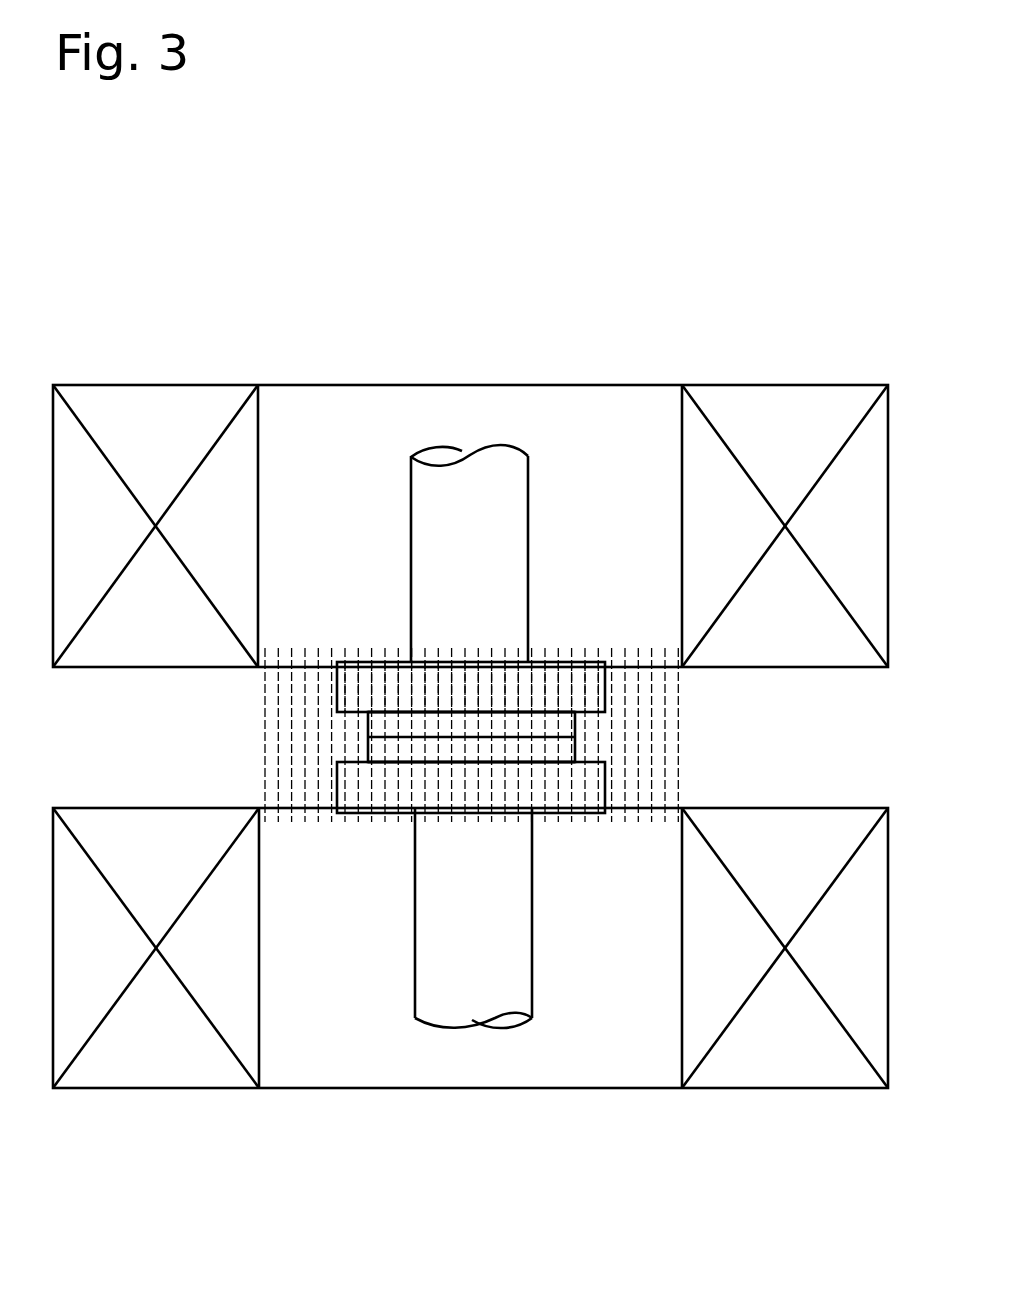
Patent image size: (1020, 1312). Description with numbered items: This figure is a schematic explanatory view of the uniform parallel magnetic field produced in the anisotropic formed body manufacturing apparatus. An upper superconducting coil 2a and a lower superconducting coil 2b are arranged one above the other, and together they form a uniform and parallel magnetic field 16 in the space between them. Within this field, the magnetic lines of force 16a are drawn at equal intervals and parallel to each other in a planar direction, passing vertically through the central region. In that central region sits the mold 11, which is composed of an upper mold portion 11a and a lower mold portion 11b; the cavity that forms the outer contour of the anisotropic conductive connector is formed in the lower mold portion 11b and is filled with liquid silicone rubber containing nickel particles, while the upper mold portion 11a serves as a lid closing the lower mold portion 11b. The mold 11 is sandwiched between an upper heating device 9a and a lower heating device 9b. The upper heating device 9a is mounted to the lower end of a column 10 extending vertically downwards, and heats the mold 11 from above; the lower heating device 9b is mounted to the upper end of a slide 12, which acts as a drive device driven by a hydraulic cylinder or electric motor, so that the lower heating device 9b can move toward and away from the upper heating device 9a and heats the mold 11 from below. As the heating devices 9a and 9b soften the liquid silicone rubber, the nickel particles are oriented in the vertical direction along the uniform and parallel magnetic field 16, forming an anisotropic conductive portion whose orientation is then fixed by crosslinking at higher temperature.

The upper superconducting coil 2a is at (470, 385).
The lower superconducting coil 2b is at (472, 1089).
The upper heating device 9a is at (362, 660).
The lower heating device 9b is at (360, 820).
The column 10 is at (528, 480).
The mold 11 is at (368, 731).
The upper mold portion 11a is at (575, 722).
The lower mold portion 11b is at (575, 750).
The slide 12 is at (532, 915).
The uniform and parallel magnetic field 16 is at (601, 645).
The magnetic lines of force 16a is at (466, 660).